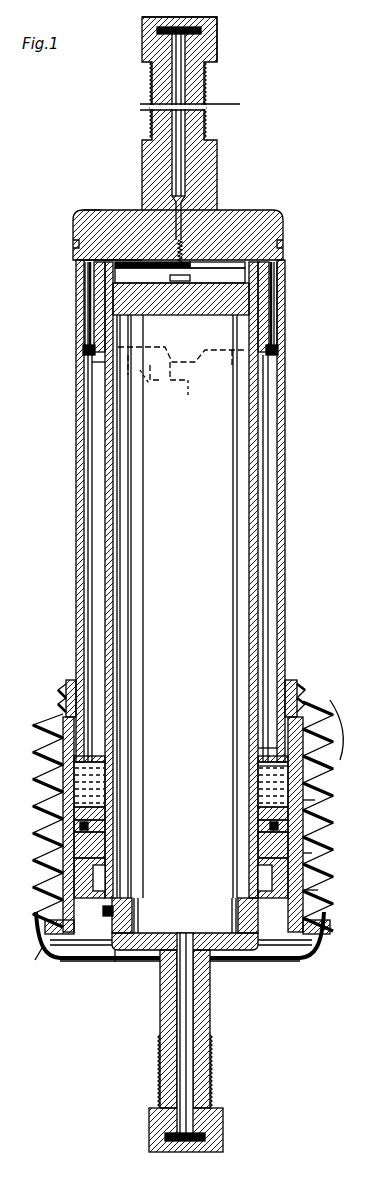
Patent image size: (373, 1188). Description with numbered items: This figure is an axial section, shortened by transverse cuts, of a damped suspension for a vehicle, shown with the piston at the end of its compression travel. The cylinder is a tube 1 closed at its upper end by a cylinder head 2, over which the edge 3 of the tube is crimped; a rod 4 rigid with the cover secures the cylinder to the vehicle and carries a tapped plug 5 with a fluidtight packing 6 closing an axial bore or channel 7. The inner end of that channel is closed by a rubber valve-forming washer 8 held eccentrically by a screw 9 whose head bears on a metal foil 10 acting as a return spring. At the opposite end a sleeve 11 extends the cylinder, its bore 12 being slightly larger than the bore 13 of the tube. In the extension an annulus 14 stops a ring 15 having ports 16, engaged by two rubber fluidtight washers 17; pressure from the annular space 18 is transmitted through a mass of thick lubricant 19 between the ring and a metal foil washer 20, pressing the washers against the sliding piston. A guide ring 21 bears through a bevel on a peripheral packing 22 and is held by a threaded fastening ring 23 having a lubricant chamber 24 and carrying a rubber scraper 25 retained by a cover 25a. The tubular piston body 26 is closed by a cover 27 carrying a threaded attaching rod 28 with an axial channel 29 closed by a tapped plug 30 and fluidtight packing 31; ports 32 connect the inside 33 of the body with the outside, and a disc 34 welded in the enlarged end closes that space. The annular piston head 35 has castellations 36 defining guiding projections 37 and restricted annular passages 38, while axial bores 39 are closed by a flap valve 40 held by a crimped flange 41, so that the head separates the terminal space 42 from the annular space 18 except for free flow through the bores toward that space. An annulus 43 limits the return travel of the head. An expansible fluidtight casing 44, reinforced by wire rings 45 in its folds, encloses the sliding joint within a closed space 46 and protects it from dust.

The tube 1 is at (287, 530).
The cylinder head 2 is at (130, 208).
The edge of the tube 3 is at (84, 208).
The rod 4 is at (150, 135).
The tapped plug 5 is at (150, 42).
The fluidtight packing 6 is at (160, 50).
The bore or channel 7 is at (172, 125).
The valve-forming washer 8 is at (112, 252).
The screw 9 is at (156, 295).
The metal foil 10 is at (190, 274).
The sleeve 11 is at (292, 700).
The bore of the extension 12 is at (262, 775).
The bore of the tube 13 is at (282, 428).
The annulus 14 is at (322, 780).
The ring 15 is at (320, 802).
The ports 16 is at (266, 808).
The fluidtight washers 17 is at (266, 828).
The annular space 18 is at (268, 612).
The thick lubricant 19 is at (266, 786).
The metal foil washer 20 is at (262, 748).
The ring 21 is at (322, 858).
The peripheral packing 22 is at (312, 838).
The fastening ring 23 is at (324, 890).
The chamber 24 is at (266, 878).
The rubber scraper 25 is at (278, 928).
The cover 25a is at (85, 962).
The tubular piston body 26 is at (234, 582).
The cover 27 is at (214, 938).
The attaching rod 28 is at (210, 1007).
The axial channel 29 is at (185, 1040).
The tapped plug 30 is at (207, 1115).
The fluidtight packing 31 is at (205, 1135).
The ports 32 is at (120, 914).
The inside of the piston body 33 is at (232, 495).
The disc 34 is at (237, 372).
The annular piston head 35 is at (275, 282).
The castellations 36 is at (143, 386).
The guiding projections 37 is at (188, 396).
The restricted annular passages 38 is at (84, 332).
The bores 39 is at (88, 300).
The flap valve 40 is at (88, 356).
The flange 41 is at (96, 362).
The terminal space 42 is at (98, 280).
The annulus 43 is at (96, 752).
The expansible fluidtight casing 44 is at (41, 963).
The wire rings 45 is at (334, 720).
The closed space 46 is at (115, 962).